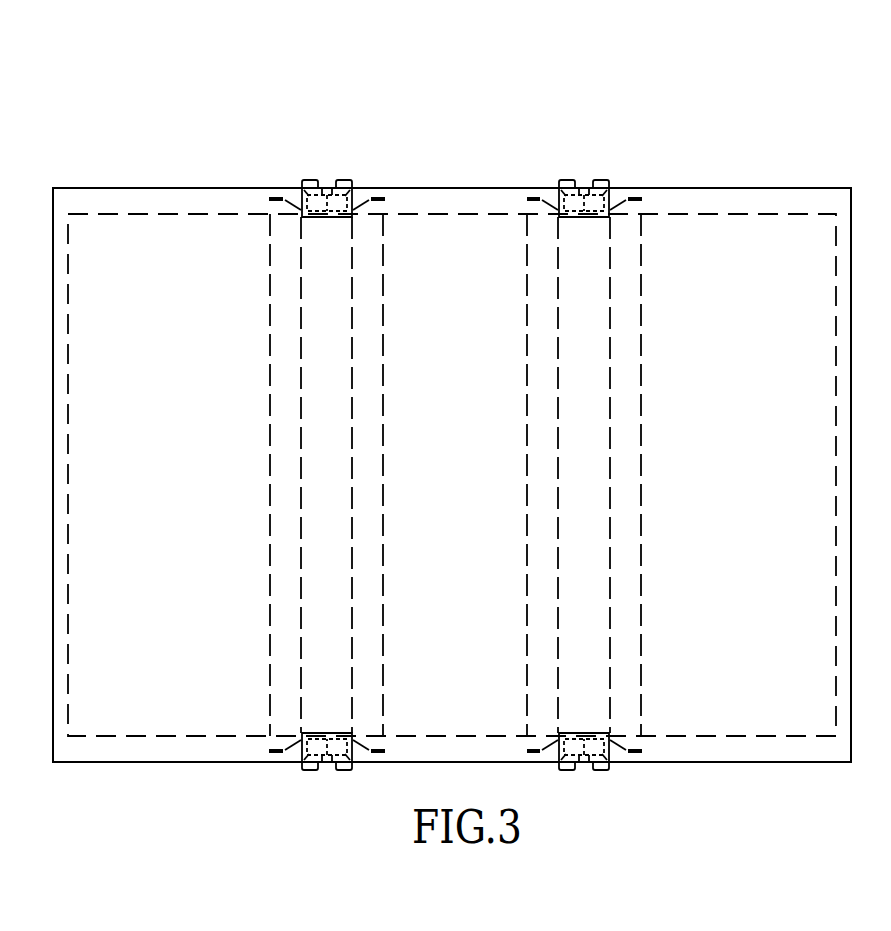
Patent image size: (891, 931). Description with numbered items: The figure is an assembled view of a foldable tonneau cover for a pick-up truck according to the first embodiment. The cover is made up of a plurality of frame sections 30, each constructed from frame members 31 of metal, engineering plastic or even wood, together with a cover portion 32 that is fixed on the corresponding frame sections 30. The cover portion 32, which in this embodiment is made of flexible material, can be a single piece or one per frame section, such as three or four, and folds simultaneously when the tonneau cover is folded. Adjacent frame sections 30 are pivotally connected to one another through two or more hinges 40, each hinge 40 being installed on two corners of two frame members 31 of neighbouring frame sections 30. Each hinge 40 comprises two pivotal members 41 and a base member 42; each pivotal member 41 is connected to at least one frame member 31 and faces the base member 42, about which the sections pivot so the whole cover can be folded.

The frame section 30 is at (477, 87).
The frame member 31 is at (412, 198).
The cover portion 32 is at (483, 198).
The hinge 40 is at (543, 73).
The pivotal member 41 is at (566, 181).
The base member 42 is at (585, 192).